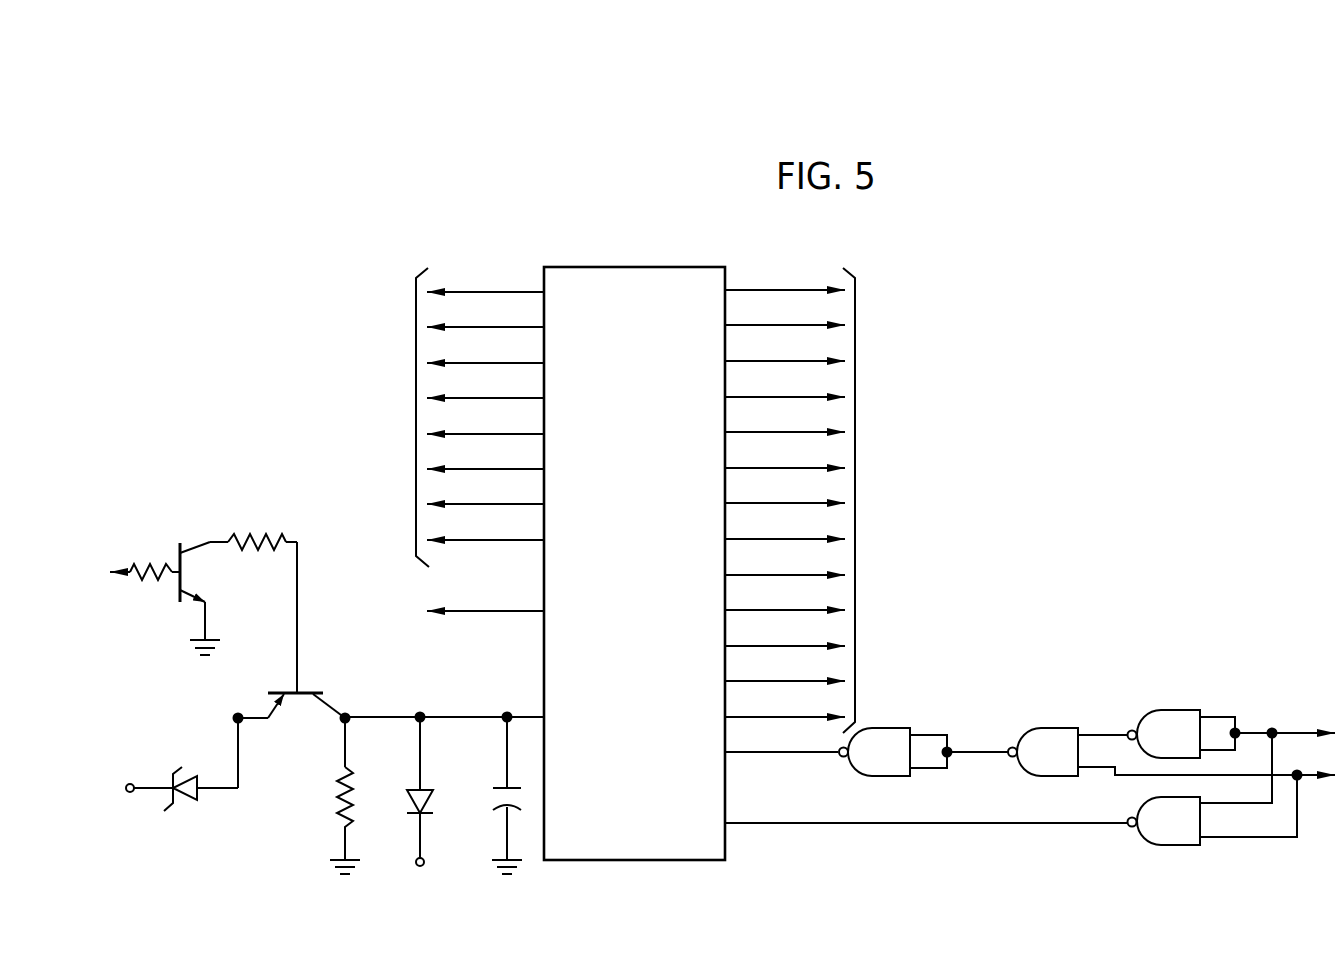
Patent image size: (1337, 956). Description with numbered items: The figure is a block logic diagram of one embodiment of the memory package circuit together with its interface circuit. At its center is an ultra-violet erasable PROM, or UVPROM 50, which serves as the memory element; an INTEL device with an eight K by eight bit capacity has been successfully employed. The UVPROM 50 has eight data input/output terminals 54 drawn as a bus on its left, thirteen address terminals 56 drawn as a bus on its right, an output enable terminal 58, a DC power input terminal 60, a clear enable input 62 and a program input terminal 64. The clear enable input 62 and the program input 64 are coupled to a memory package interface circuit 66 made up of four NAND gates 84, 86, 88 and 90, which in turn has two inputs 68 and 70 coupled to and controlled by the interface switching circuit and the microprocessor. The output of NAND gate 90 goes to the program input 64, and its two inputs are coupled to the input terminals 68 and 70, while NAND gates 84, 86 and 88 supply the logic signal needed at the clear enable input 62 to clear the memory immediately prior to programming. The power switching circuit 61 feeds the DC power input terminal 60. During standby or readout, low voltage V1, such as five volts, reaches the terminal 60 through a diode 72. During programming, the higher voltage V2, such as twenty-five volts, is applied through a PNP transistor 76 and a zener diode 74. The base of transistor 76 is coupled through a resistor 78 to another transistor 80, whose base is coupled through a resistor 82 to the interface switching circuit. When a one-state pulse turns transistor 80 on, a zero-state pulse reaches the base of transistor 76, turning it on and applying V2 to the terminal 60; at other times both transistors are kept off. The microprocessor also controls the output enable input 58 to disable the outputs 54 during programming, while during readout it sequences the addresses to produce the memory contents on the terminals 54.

The UVPROM 50 is at (620, 280).
The data input/output terminals 54 is at (413, 427).
The address terminals 56 is at (857, 488).
The output enable terminal 58 is at (518, 610).
The DC power input terminal 60 is at (524, 717).
The programming voltage switching circuit 61 is at (319, 626).
The clear enable input 62 is at (750, 753).
The program input terminal 64 is at (752, 825).
The memory package interface circuit 66 is at (1183, 696).
The input 68 is at (1322, 727).
The input 70 is at (1307, 783).
The diode 72 is at (430, 802).
The zener diode 74 is at (190, 803).
The PNP transistor 76 is at (327, 700).
The resistor 78 is at (255, 538).
The transistor 80 is at (178, 588).
The resistor 82 is at (142, 560).
The NAND gate 84 is at (880, 737).
The NAND gate 86 is at (1057, 772).
The NAND gate 88 is at (1185, 714).
The NAND gate 90 is at (1150, 840).